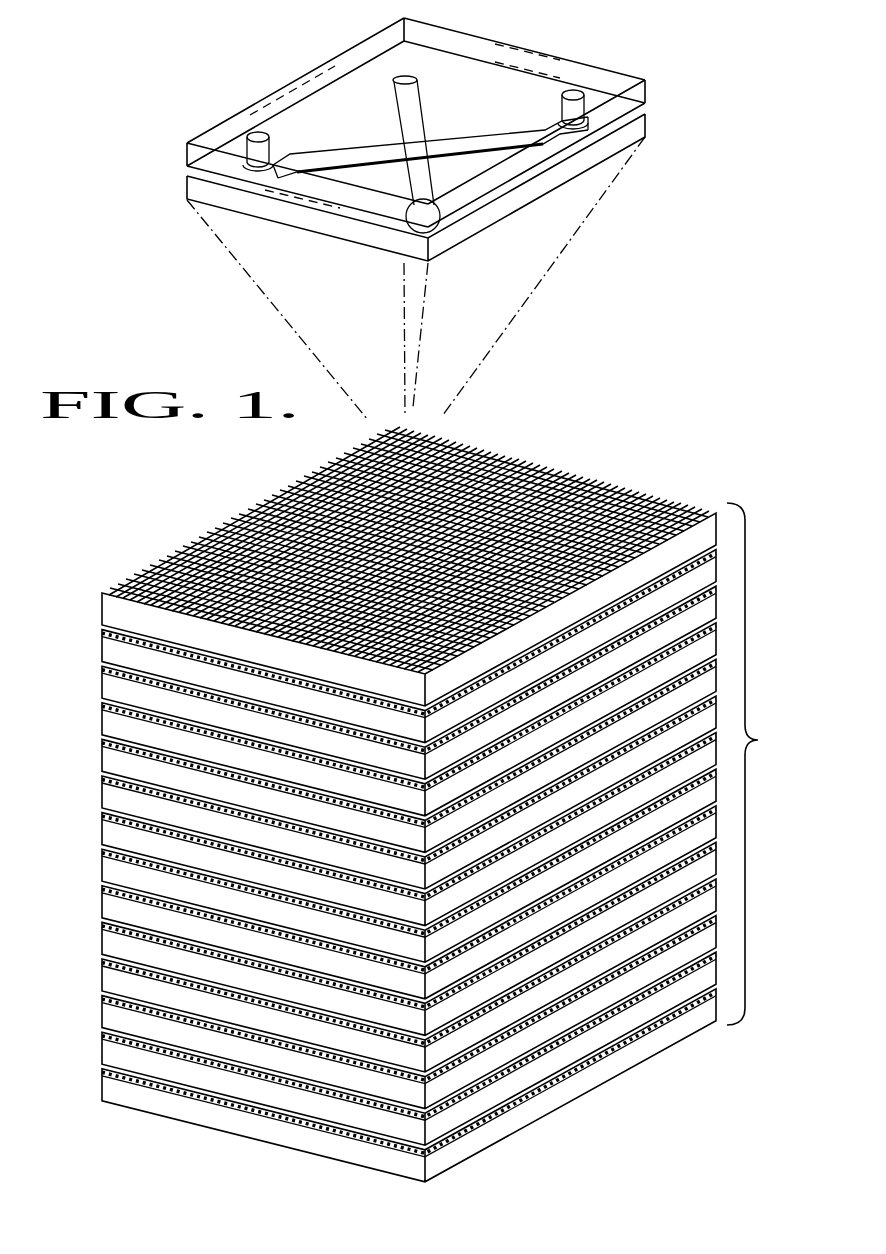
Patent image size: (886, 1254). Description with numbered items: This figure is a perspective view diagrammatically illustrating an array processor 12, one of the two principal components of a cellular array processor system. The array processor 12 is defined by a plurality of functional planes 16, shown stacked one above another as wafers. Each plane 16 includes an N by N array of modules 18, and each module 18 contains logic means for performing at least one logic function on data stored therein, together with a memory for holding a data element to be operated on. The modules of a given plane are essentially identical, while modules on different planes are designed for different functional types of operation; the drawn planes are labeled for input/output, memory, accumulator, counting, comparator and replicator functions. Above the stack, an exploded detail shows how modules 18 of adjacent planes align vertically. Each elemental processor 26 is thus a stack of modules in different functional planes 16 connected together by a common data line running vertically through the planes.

The array processor 12 is at (690, 452).
The functional planes 16 is at (767, 764).
The modules 18 is at (652, 88).
The elemental processors 26 is at (593, 58).